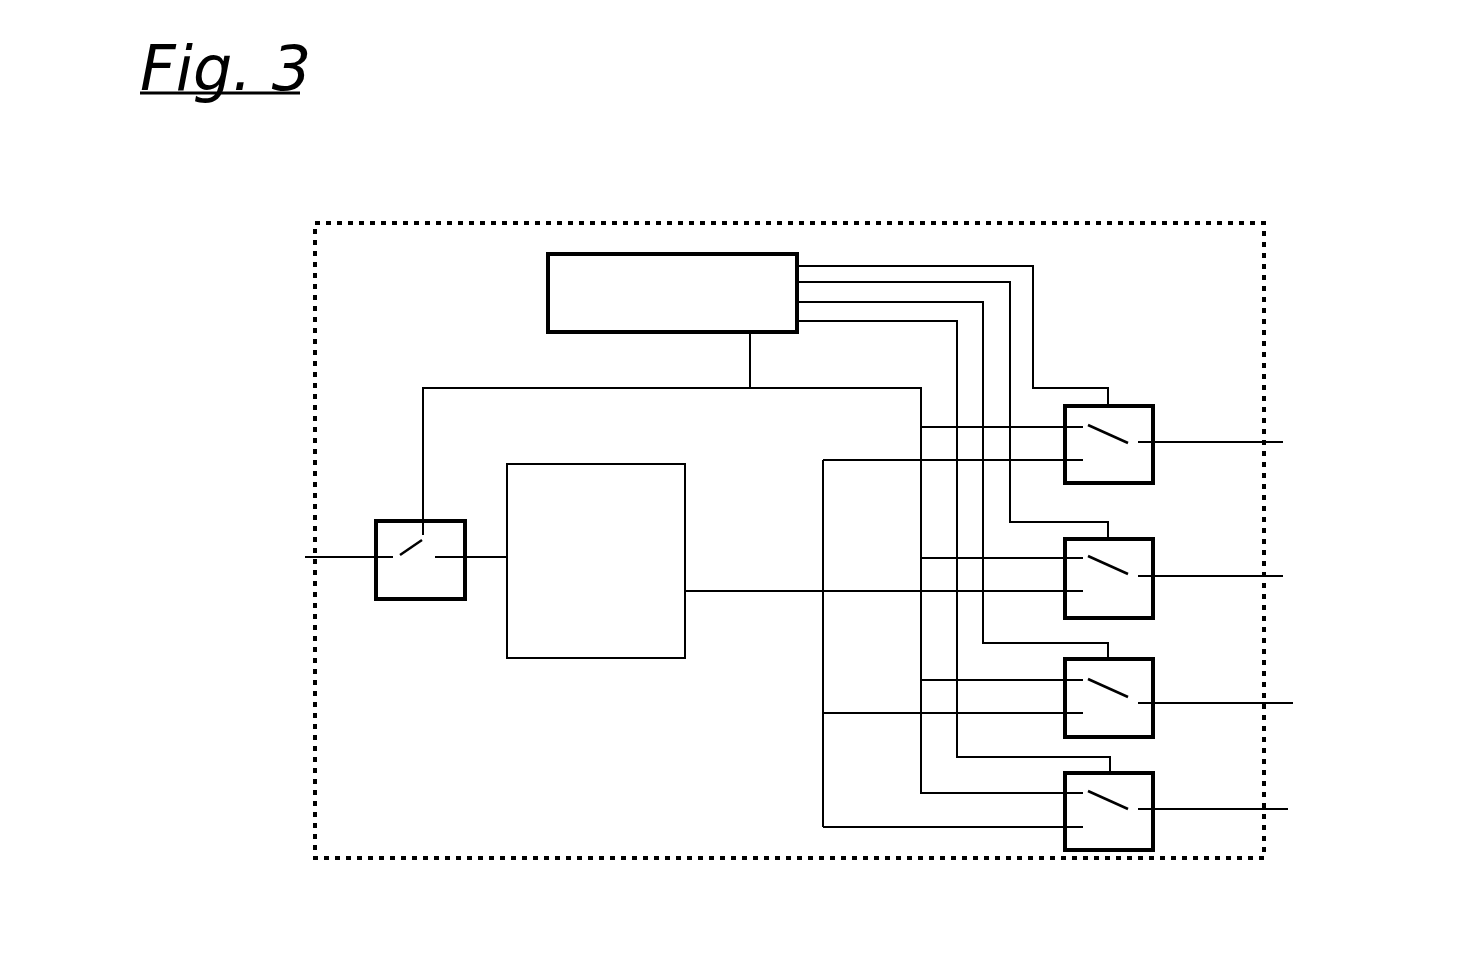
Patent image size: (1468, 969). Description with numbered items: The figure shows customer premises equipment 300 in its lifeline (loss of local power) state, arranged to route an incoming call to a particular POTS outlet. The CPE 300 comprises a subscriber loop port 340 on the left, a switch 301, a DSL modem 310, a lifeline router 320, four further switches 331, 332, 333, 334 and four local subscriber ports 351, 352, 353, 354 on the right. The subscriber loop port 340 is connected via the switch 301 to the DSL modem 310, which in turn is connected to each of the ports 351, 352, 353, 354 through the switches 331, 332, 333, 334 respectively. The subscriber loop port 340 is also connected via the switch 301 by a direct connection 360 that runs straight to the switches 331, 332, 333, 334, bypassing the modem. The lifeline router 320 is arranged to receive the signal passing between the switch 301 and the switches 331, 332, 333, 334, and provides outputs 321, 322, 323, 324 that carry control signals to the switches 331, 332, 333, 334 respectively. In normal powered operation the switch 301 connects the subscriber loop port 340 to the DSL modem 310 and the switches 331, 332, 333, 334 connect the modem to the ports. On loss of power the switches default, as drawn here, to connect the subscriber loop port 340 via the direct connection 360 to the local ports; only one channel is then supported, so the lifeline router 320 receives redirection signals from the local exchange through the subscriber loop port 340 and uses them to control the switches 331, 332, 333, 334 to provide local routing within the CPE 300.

The customer premises equipment 300 is at (789, 524).
The switch 301 is at (441, 543).
The DSL modem 310 is at (786, 629).
The lifeline router 320 is at (672, 306).
The output 321 is at (952, 336).
The output 322 is at (952, 410).
The output 323 is at (952, 480).
The output 324 is at (953, 547).
The switch 331 is at (1119, 431).
The switch 332 is at (1119, 564).
The switch 333 is at (1119, 686).
The switch 334 is at (1119, 796).
The subscriber loop port 340 is at (258, 575).
The local subscriber port 351 is at (1295, 448).
The local subscriber port 352 is at (1294, 577).
The local subscriber port 353 is at (1293, 703).
The local subscriber port 354 is at (1295, 813).
The direct connection 360 is at (744, 573).